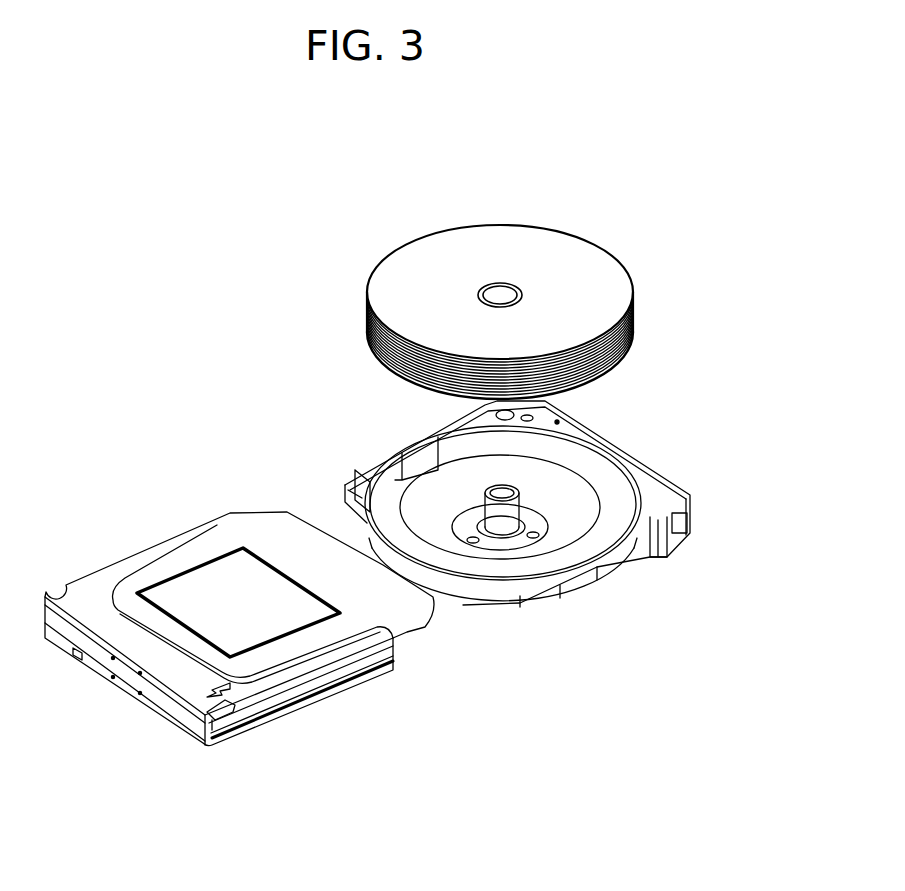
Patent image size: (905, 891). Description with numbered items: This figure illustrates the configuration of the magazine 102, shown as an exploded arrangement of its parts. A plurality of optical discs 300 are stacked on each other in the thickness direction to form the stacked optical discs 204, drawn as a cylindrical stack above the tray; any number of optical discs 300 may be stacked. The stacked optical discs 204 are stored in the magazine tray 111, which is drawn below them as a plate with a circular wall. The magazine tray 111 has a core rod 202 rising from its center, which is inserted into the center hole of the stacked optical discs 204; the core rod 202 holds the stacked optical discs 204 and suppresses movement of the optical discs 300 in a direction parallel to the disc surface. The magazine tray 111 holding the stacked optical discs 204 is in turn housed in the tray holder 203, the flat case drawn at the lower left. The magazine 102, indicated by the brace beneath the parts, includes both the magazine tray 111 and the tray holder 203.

The magazine 102 is at (695, 785).
The magazine tray 111 is at (539, 495).
The core rod 202 is at (502, 524).
The tray holder 203 is at (346, 720).
The stacked optical discs 204 is at (606, 280).
The optical disc 300 is at (572, 311).